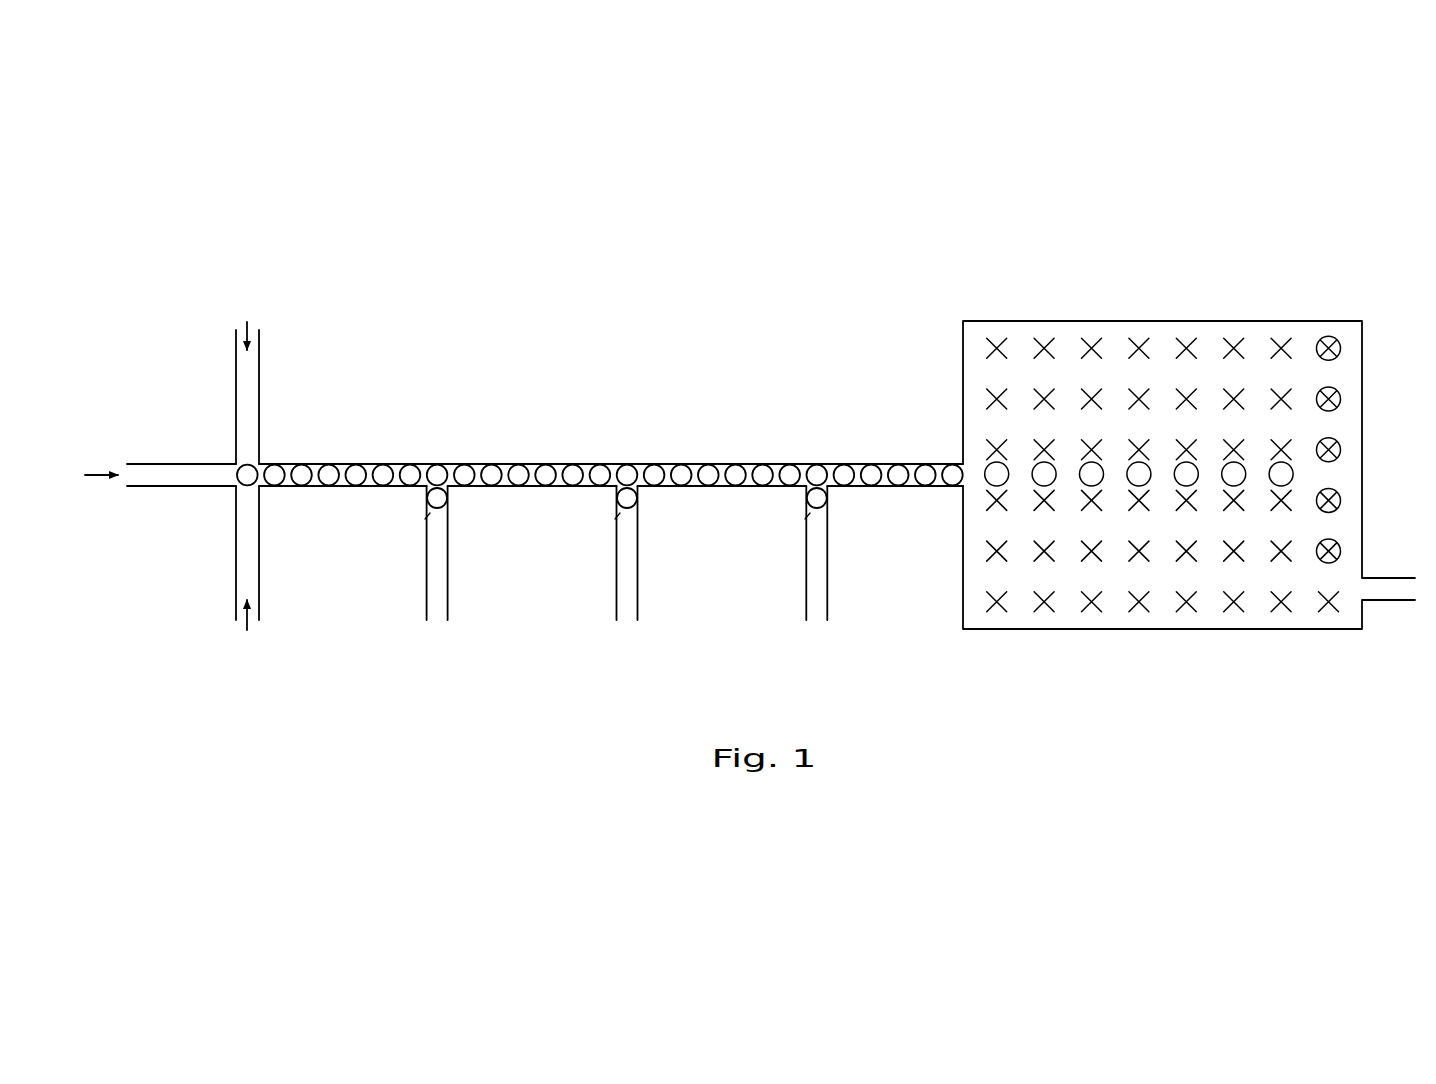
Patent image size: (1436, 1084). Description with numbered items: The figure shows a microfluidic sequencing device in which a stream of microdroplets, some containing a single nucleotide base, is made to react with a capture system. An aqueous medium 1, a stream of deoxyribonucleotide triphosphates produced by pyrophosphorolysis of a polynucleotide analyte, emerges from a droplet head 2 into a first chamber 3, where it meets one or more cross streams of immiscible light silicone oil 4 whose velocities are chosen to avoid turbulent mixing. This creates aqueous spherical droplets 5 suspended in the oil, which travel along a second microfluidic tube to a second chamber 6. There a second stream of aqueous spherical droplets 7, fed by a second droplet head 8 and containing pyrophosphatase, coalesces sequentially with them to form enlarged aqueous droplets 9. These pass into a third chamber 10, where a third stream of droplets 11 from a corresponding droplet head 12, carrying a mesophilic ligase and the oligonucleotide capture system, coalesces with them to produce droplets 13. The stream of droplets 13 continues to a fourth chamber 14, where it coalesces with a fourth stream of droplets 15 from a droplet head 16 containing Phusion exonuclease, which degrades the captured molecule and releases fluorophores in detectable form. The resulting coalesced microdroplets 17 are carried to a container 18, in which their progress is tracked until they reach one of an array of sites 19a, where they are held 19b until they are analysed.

The aqueous medium 1 is at (91, 475).
The droplet head 2 is at (228, 468).
The first chamber 3 is at (262, 465).
The immiscible light silicone oil 4 is at (247, 476).
The aqueous spherical droplets 5 is at (356, 483).
The second chamber 6 is at (452, 463).
The second stream of aqueous spherical droplets 7 is at (444, 498).
The second droplet head 8 is at (445, 514).
The enlarged aqueous droplets 9 is at (574, 464).
The third chamber 10 is at (641, 463).
The third stream of aqueous spherical droplets 11 is at (634, 498).
The droplet head 12 is at (635, 514).
The droplets 13 is at (764, 464).
The fourth chamber 14 is at (831, 463).
The fourth stream of aqueous spherical droplets 15 is at (824, 498).
The droplet head 16 is at (825, 514).
The coalesced microdroplets 17 is at (953, 464).
The container 18 is at (1212, 320).
The array of sites 19a is at (1186, 603).
The held droplets 19b is at (1341, 451).